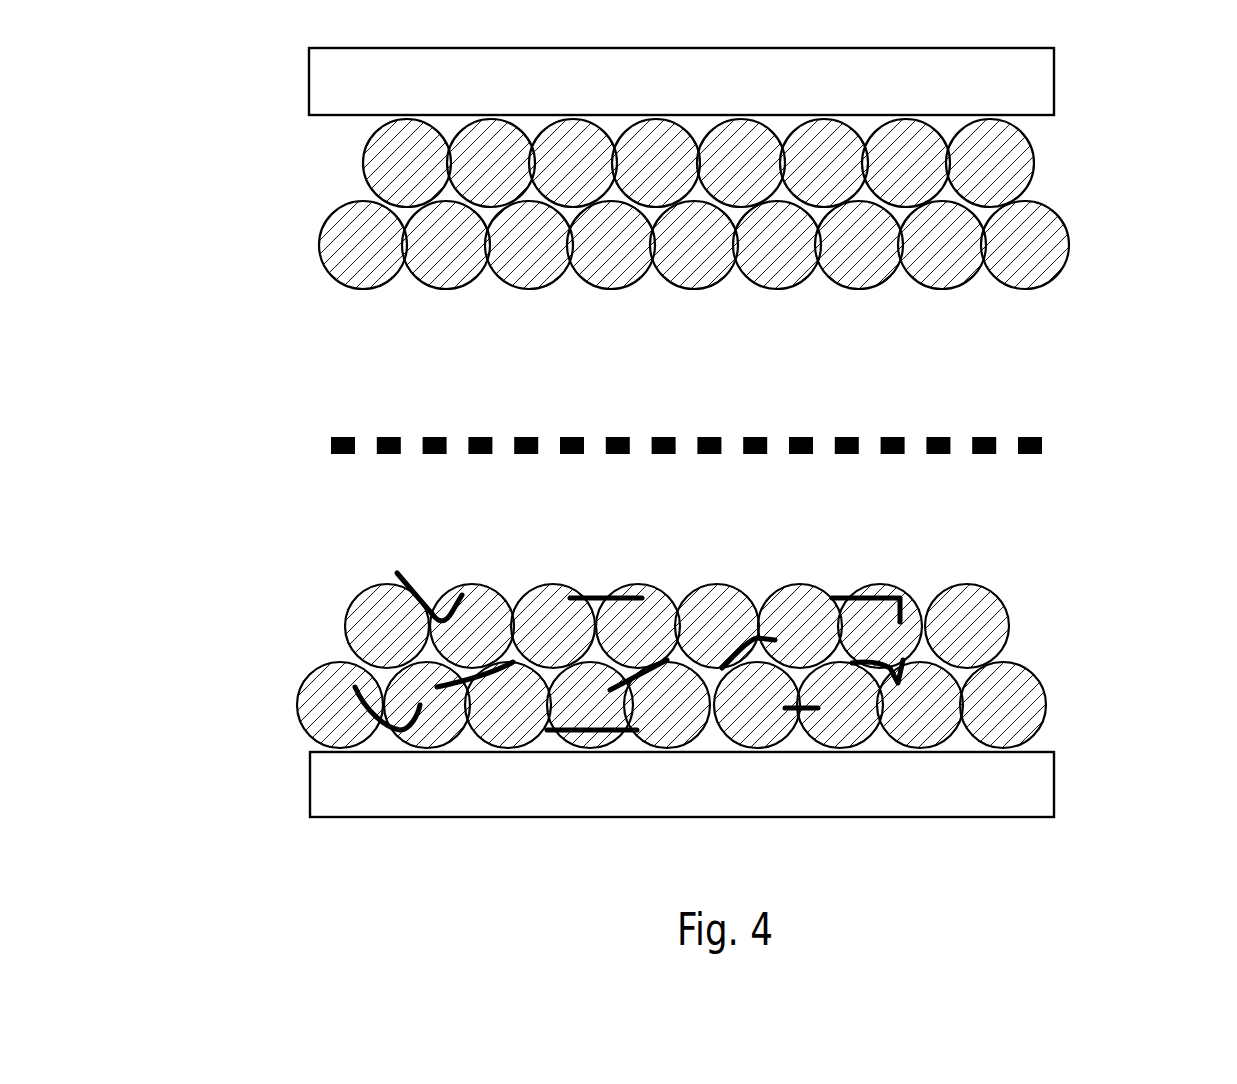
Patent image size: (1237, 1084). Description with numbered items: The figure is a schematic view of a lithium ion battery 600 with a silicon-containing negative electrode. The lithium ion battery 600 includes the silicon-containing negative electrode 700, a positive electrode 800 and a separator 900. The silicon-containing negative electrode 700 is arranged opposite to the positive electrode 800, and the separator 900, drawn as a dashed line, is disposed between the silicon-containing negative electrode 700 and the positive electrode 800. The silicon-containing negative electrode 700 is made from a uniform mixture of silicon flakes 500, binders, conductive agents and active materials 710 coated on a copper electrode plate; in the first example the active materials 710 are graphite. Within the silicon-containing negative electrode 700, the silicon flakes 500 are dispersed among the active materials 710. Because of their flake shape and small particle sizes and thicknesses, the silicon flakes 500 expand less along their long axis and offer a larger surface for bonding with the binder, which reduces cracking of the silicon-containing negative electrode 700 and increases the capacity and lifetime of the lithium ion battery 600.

The lithium ion battery 600 is at (226, 74).
The positive electrode 800 is at (1067, 140).
The separator 900 is at (1042, 446).
The silicon-containing negative electrode 700 is at (763, 678).
The active materials 710 is at (1023, 712).
The silicon flakes 500 is at (878, 598).